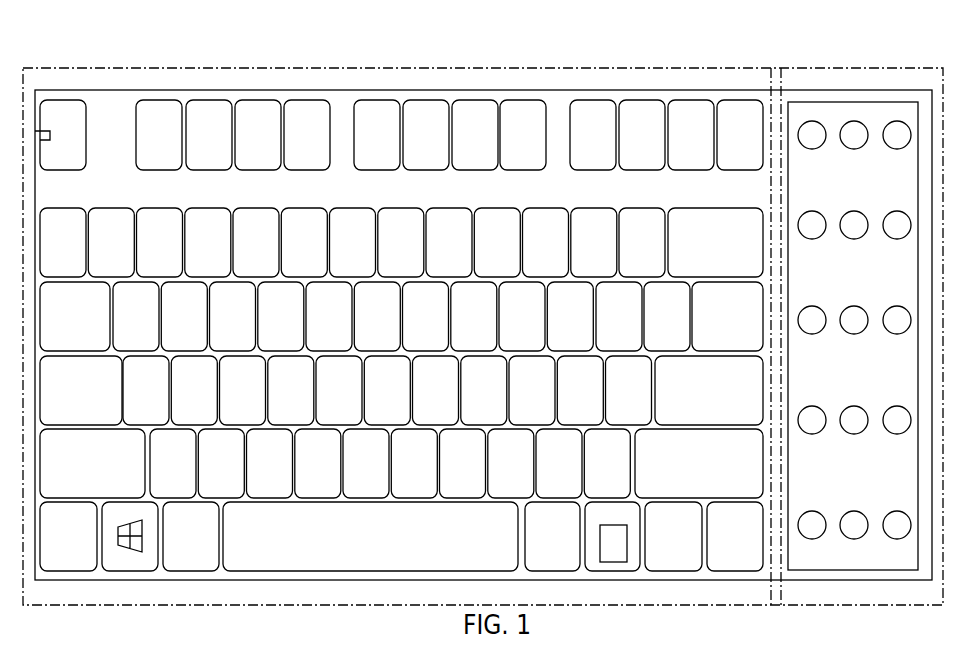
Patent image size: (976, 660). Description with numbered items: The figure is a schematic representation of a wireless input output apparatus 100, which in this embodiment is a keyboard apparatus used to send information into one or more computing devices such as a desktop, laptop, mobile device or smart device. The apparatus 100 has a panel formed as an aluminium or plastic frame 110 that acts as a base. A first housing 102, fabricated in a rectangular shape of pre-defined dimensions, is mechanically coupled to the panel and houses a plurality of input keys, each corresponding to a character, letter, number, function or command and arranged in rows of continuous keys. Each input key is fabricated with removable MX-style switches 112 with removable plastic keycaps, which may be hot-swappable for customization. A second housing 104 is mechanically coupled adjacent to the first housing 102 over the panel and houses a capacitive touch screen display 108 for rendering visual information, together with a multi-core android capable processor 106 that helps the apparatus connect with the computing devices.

The wireless input output apparatus 100 is at (483, 306).
The first housing 102 is at (483, 318).
The second housing 104 is at (765, 318).
The multi-core android capable processor 106 is at (853, 302).
The capacitive touch screen display 108 is at (854, 92).
The aluminium or plastic frame 110 is at (483, 306).
The MX-style switches 112 is at (60, 101).